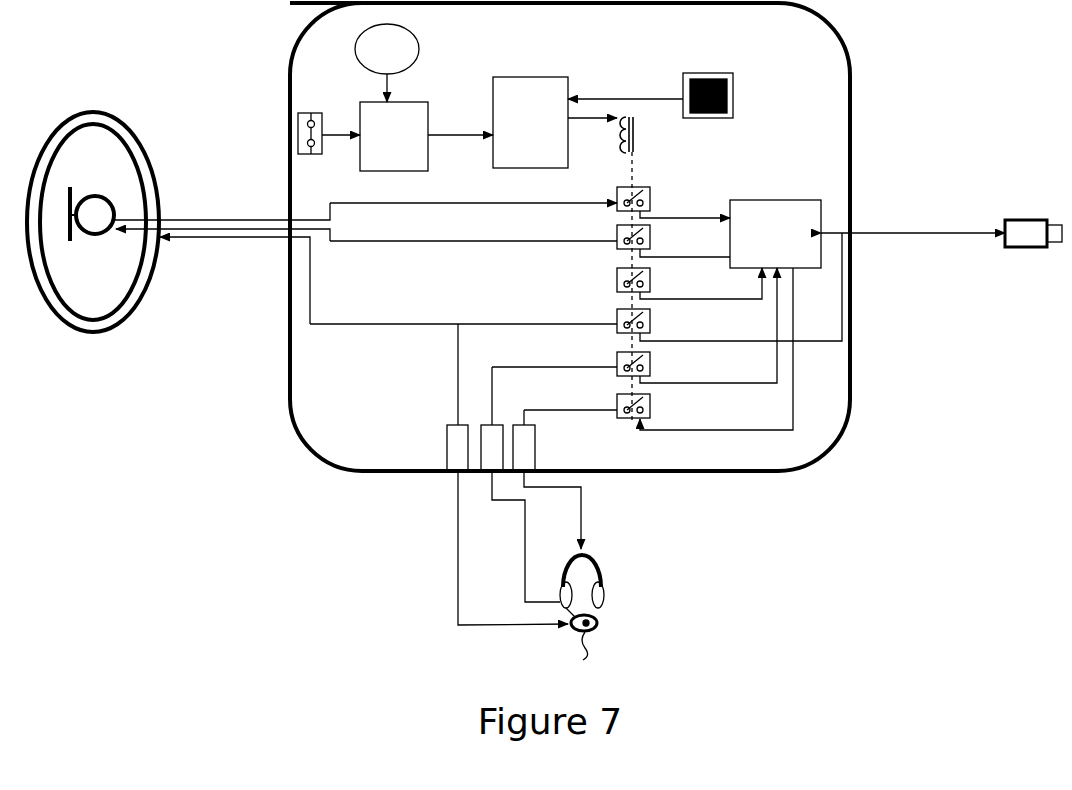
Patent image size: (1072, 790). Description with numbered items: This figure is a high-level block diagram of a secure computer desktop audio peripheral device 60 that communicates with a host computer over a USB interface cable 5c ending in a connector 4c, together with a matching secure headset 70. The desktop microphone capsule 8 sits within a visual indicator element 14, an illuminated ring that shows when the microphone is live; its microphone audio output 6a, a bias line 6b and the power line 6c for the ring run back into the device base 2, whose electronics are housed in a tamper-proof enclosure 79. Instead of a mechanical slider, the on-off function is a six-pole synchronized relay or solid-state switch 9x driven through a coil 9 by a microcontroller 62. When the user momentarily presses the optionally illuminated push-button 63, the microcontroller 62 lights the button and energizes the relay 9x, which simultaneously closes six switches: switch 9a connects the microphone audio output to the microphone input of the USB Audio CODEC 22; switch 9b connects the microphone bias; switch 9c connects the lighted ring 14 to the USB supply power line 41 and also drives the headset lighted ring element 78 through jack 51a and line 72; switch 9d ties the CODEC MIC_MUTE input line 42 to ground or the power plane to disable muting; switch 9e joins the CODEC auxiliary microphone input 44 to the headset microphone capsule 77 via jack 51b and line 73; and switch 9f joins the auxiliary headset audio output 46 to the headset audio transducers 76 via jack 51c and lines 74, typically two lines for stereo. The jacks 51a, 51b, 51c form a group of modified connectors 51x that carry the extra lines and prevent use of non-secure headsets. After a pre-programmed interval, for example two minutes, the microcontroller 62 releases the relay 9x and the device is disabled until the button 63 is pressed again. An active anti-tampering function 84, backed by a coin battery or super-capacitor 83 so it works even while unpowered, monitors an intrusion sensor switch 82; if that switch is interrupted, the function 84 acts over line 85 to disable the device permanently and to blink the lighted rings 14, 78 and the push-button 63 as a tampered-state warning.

The secure computer desktop audio peripheral device 60 is at (93, 64).
The visual indicator element 14 is at (137, 130).
The microphone capsule 8 is at (94, 196).
The microphone audio output 6a is at (185, 220).
The signal line 6b is at (214, 234).
The power line 6c is at (253, 242).
The switch 82 is at (310, 113).
The coin battery or super-capacitor 83 is at (419, 49).
The active anti-tampering function 84 is at (358, 165).
The line 85 is at (455, 138).
The microcontroller 62 is at (515, 77).
The momentary push-button 63 is at (735, 99).
The coil 9 is at (636, 131).
The switch 9a is at (651, 199).
The switch 9b is at (617, 230).
The switch 9c is at (617, 312).
The switch 9d is at (617, 272).
The switch 9e is at (617, 354).
The switch 9f is at (617, 397).
The relay or electronic switching circuitry 9x is at (628, 424).
The USB Audio CODEC 22 is at (743, 200).
The device base 2 is at (852, 287).
The MIC_MUTE input line 42 is at (760, 290).
The USB supply power line 41 is at (722, 339).
The auxiliary microphone input 44 is at (722, 381).
The auxiliary headset audio output 46 is at (722, 427).
The USB interface cable 5c is at (933, 232).
The camera 4c is at (1030, 220).
The tamper-proof enclosure 79 is at (325, 460).
The jack 51a is at (447, 449).
The jack 51b is at (484, 476).
The jack 51c is at (537, 452).
The connector group 51x is at (438, 495).
The line 72 is at (458, 585).
The line 73 is at (527, 527).
The lines 74 is at (583, 519).
The audio transducers 76 is at (604, 593).
The microphone capsule 77 is at (598, 621).
The lighted ring element 78 is at (582, 658).
The secure headset 70 is at (656, 623).